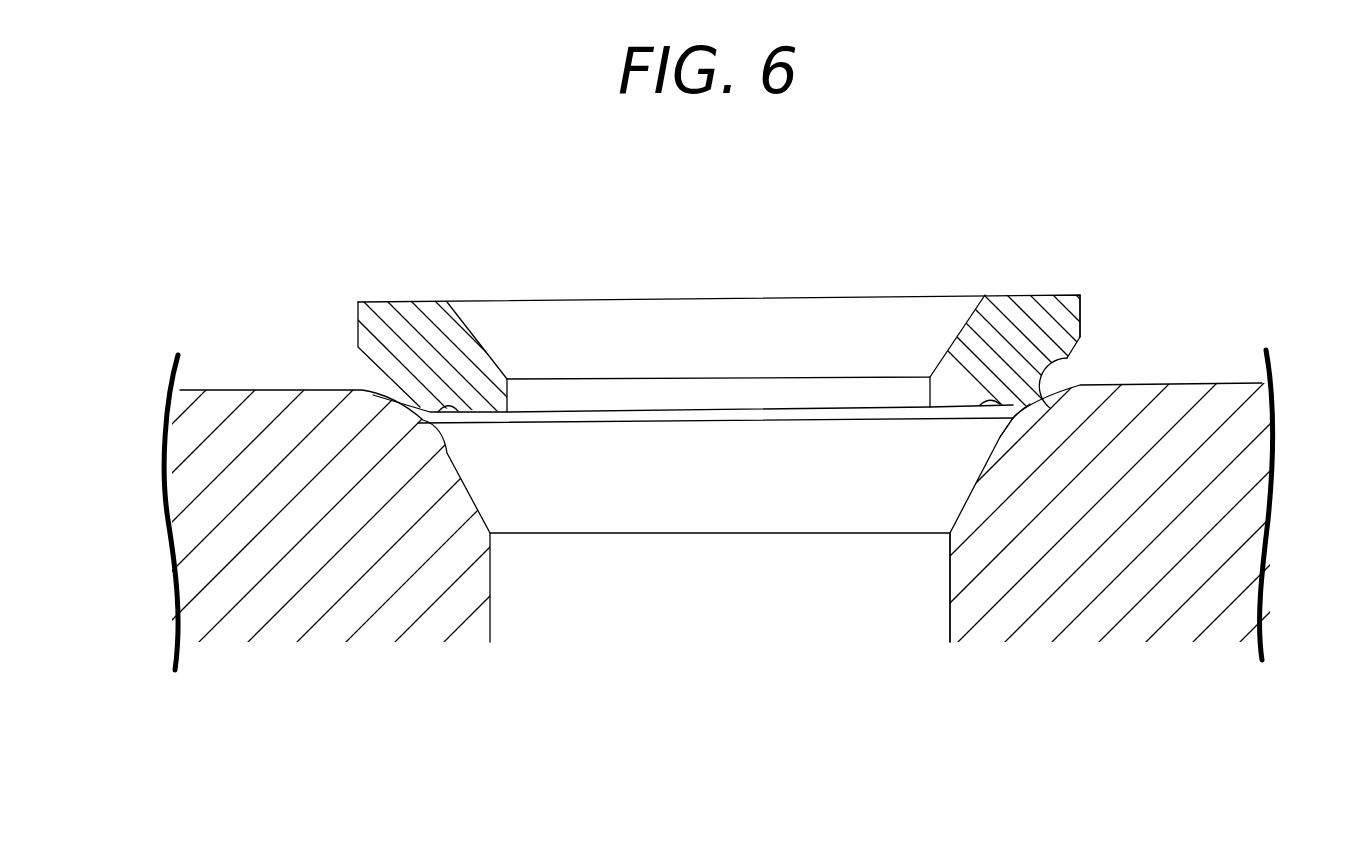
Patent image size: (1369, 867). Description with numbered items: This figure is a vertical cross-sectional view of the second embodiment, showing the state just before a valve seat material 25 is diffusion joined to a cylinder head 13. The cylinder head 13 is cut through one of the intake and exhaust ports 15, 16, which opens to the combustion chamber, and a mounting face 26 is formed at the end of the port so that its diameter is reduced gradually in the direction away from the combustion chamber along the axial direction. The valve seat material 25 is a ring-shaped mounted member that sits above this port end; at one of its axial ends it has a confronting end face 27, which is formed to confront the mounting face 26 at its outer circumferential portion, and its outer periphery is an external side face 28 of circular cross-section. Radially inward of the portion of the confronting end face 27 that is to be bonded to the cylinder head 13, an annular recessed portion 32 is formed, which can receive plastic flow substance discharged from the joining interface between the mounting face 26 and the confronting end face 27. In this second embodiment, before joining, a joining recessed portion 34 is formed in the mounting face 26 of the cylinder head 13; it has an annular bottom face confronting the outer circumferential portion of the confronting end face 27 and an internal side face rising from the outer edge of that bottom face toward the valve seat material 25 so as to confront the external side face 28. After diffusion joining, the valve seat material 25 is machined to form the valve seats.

The cylinder head 13 is at (1222, 543).
The intake port 15 is at (945, 583).
The exhaust port 16 is at (998, 630).
The valve seat material 25 is at (1028, 312).
The mounting face 26 is at (993, 430).
The confronting end face 27 is at (1012, 402).
The external side face 28 is at (1083, 315).
The annular recessed portion 32 is at (987, 407).
The joining recessed portion 34 is at (1063, 355).